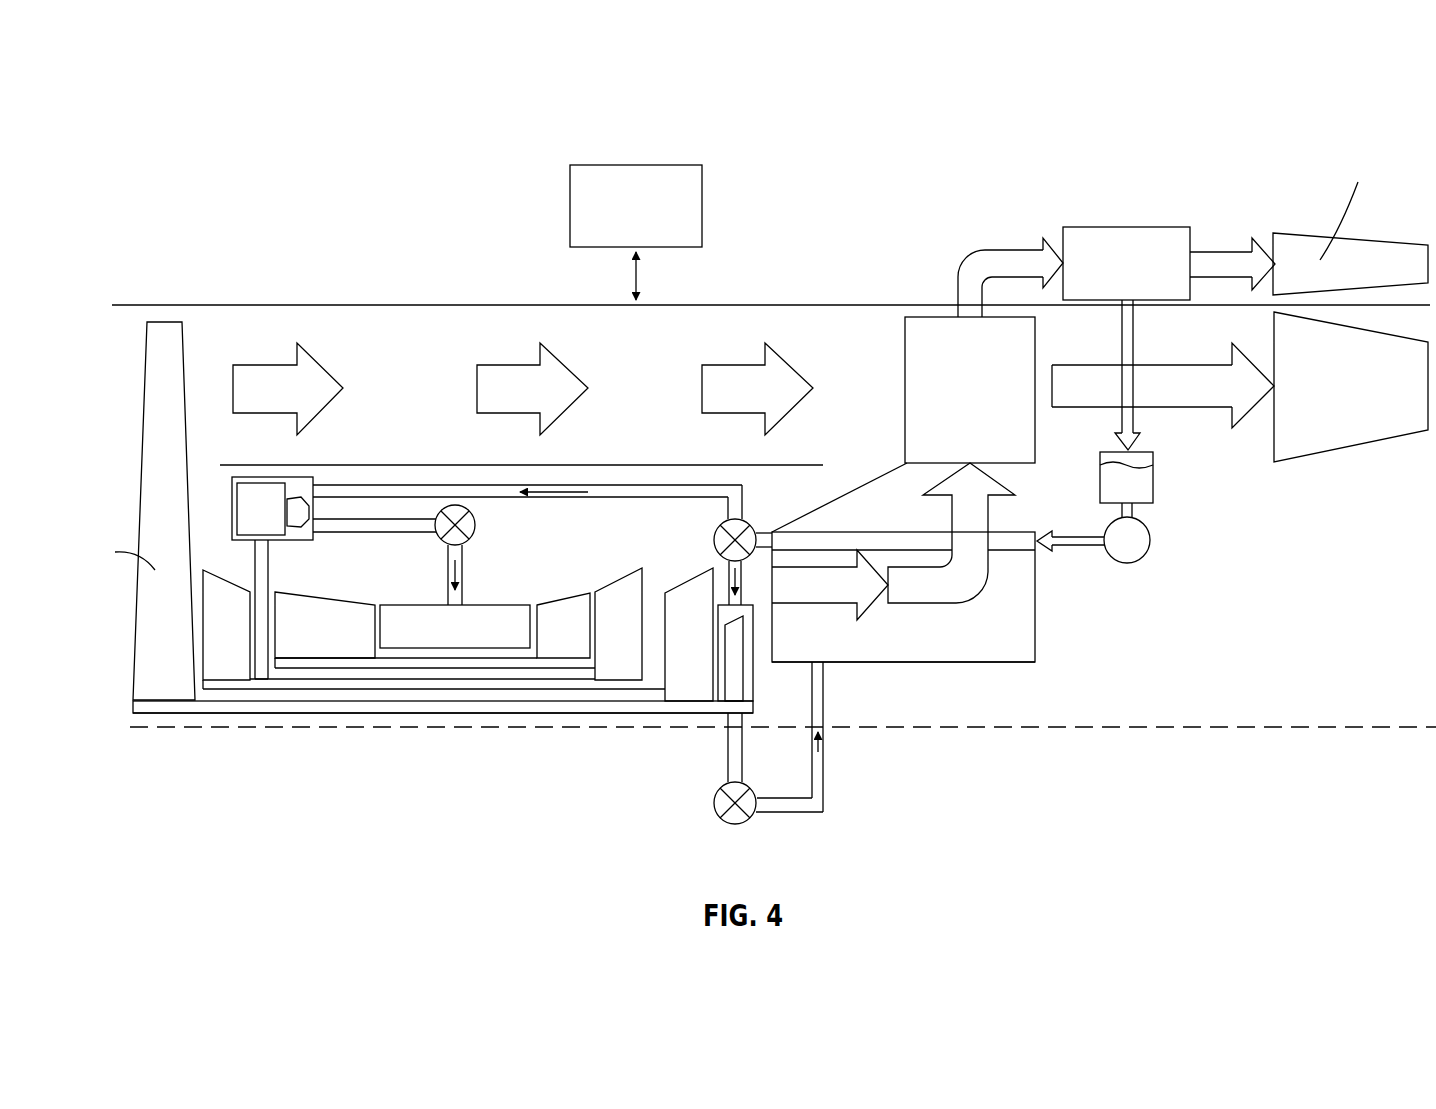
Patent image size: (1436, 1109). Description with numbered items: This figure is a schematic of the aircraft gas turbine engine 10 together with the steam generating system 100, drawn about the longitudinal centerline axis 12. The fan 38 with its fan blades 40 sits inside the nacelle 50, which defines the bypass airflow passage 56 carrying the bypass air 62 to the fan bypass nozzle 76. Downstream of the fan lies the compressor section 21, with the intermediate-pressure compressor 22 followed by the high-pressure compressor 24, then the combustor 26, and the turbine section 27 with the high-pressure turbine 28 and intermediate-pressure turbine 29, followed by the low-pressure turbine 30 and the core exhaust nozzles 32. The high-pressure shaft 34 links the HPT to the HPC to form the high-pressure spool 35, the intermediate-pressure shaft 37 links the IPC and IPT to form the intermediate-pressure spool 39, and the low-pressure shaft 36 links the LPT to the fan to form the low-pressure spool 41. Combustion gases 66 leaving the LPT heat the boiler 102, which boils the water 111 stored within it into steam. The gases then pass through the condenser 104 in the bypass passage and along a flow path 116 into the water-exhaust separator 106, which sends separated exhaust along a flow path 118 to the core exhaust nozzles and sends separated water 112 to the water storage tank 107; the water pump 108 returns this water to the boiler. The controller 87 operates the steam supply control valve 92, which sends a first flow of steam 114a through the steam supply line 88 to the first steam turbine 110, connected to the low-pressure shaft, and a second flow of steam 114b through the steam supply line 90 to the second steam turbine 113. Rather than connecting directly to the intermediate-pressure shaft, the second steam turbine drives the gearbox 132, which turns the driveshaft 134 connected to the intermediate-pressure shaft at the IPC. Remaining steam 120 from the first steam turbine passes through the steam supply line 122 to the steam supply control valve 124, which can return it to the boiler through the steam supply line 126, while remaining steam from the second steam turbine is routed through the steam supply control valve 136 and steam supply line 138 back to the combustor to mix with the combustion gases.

The aircraft gas turbine engine 10 is at (175, 265).
The longitudinal centerline axis 12 is at (1142, 730).
The compressor section 21 is at (282, 574).
The intermediate-pressure compressor 22 is at (210, 657).
The high-pressure compressor 24 is at (338, 605).
The combustor 26 is at (432, 605).
The turbine section 27 is at (592, 526).
The high-pressure turbine 28 is at (580, 605).
The intermediate-pressure turbine 29 is at (615, 603).
The low-pressure turbine 30 is at (692, 592).
The core exhaust nozzles 32 is at (1397, 242).
The high-pressure shaft 34 is at (378, 664).
The high-pressure spool 35 is at (428, 667).
The low-pressure shaft 36 is at (200, 708).
The intermediate-pressure shaft 37 is at (273, 686).
The fan 38 is at (156, 456).
The intermediate-pressure spool 39 is at (338, 686).
The fan blades 40 is at (155, 352).
The low-pressure spool 41 is at (292, 713).
The nacelle 50 is at (268, 305).
The bypass airflow passage 56 is at (700, 326).
The bypass air 62 is at (525, 363).
The combustion gases 66 is at (1205, 408).
The fan bypass nozzle 76 is at (1377, 443).
The controller 87 is at (568, 203).
The steam supply line 88 is at (735, 465).
The steam supply line 90 is at (458, 465).
The steam supply control valve 92 is at (716, 528).
The steam generating system 100 is at (827, 155).
The boiler 102 is at (1047, 642).
The condenser 104 is at (921, 316).
The water-exhaust separator 106 is at (1127, 227).
The water storage tank 107 is at (1097, 478).
The water pump 108 is at (1137, 549).
The first steam turbine 110 is at (733, 680).
The water 111 is at (983, 656).
The separated water 112 is at (1120, 350).
The second steam turbine 113 is at (292, 498).
The first flow of steam 114a is at (745, 575).
The second flow of steam 114b is at (578, 465).
The exhaust line to water separator 116 is at (1003, 250).
The exhaust line to core nozzle 118 is at (1233, 251).
The remaining steam 120 is at (456, 587).
The steam supply line 122 is at (743, 730).
The steam supply control valve 124 is at (735, 825).
The steam supply line 126 is at (823, 778).
The gearbox 132 is at (250, 523).
The driveshaft 134 is at (253, 568).
The steam supply control valve 136 is at (477, 528).
The steam supply line 138 is at (465, 556).